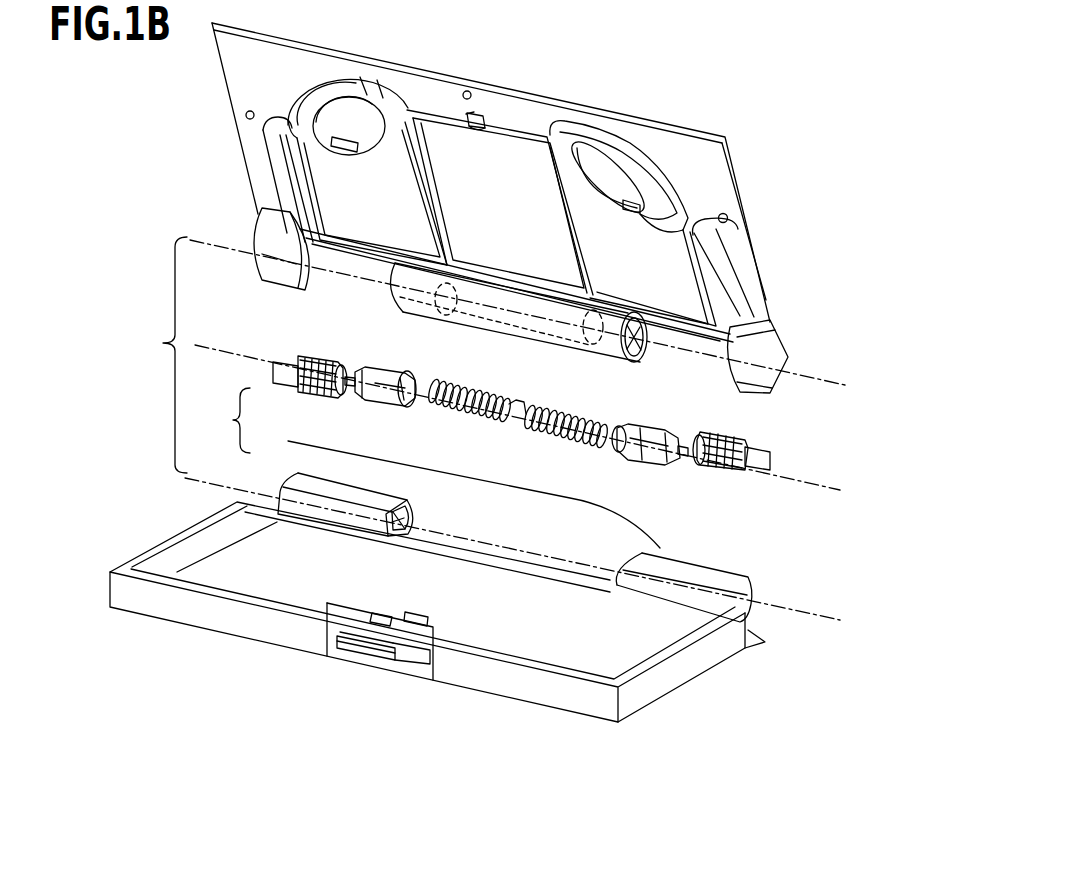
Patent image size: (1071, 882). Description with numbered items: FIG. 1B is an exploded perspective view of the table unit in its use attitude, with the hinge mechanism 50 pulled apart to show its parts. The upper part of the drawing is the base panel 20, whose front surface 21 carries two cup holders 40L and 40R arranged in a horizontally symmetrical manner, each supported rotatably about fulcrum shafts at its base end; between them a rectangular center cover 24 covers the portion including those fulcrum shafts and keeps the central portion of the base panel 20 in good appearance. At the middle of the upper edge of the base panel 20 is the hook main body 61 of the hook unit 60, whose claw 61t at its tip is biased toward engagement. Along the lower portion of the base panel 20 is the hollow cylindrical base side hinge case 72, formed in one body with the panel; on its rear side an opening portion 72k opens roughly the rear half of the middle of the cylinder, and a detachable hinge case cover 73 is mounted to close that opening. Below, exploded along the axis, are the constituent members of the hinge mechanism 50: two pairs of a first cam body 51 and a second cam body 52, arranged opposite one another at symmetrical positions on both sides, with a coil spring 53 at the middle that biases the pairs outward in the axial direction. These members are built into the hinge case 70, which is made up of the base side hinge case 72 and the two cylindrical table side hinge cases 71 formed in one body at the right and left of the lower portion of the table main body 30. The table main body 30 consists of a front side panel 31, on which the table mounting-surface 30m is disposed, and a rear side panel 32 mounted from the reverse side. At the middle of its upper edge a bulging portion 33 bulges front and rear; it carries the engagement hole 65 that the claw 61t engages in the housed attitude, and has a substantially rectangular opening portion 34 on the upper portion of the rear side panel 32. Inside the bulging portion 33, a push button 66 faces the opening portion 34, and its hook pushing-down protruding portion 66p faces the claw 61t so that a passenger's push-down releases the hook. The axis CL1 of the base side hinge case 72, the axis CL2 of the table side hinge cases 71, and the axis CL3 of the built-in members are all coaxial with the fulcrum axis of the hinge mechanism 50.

The base panel 20 is at (503, 221).
The front surface 21 is at (707, 177).
The center cover 24 is at (503, 178).
The cup holder 40L is at (330, 177).
The cup holder 40R is at (667, 263).
The hook main body 61 is at (480, 112).
The claw 61t is at (460, 121).
The base side hinge case 72 is at (410, 322).
The opening portion 72k is at (395, 296).
The hinge case cover 73 is at (537, 333).
The hinge mechanism 50 is at (519, 392).
The first cam body 51 is at (300, 357).
The second cam body 52 is at (405, 372).
The coil spring 53 is at (565, 430).
The hinge case 70 is at (227, 420).
The table side hinge case 71 is at (350, 481).
The table main body 30 is at (489, 620).
The table mounting-surface 30m is at (637, 633).
The front side panel 31 is at (160, 567).
The rear side panel 32 is at (150, 618).
The bulging portion 33 is at (333, 603).
The opening portion 34 is at (393, 648).
The hook unit 60 is at (334, 678).
The engagement hole 65 is at (423, 643).
The push button 66 is at (365, 655).
The hook pushing-down protruding portion 66p is at (333, 640).
The axis CL1 is at (813, 373).
The axis CL2 is at (810, 615).
The axis CL3 is at (812, 478).